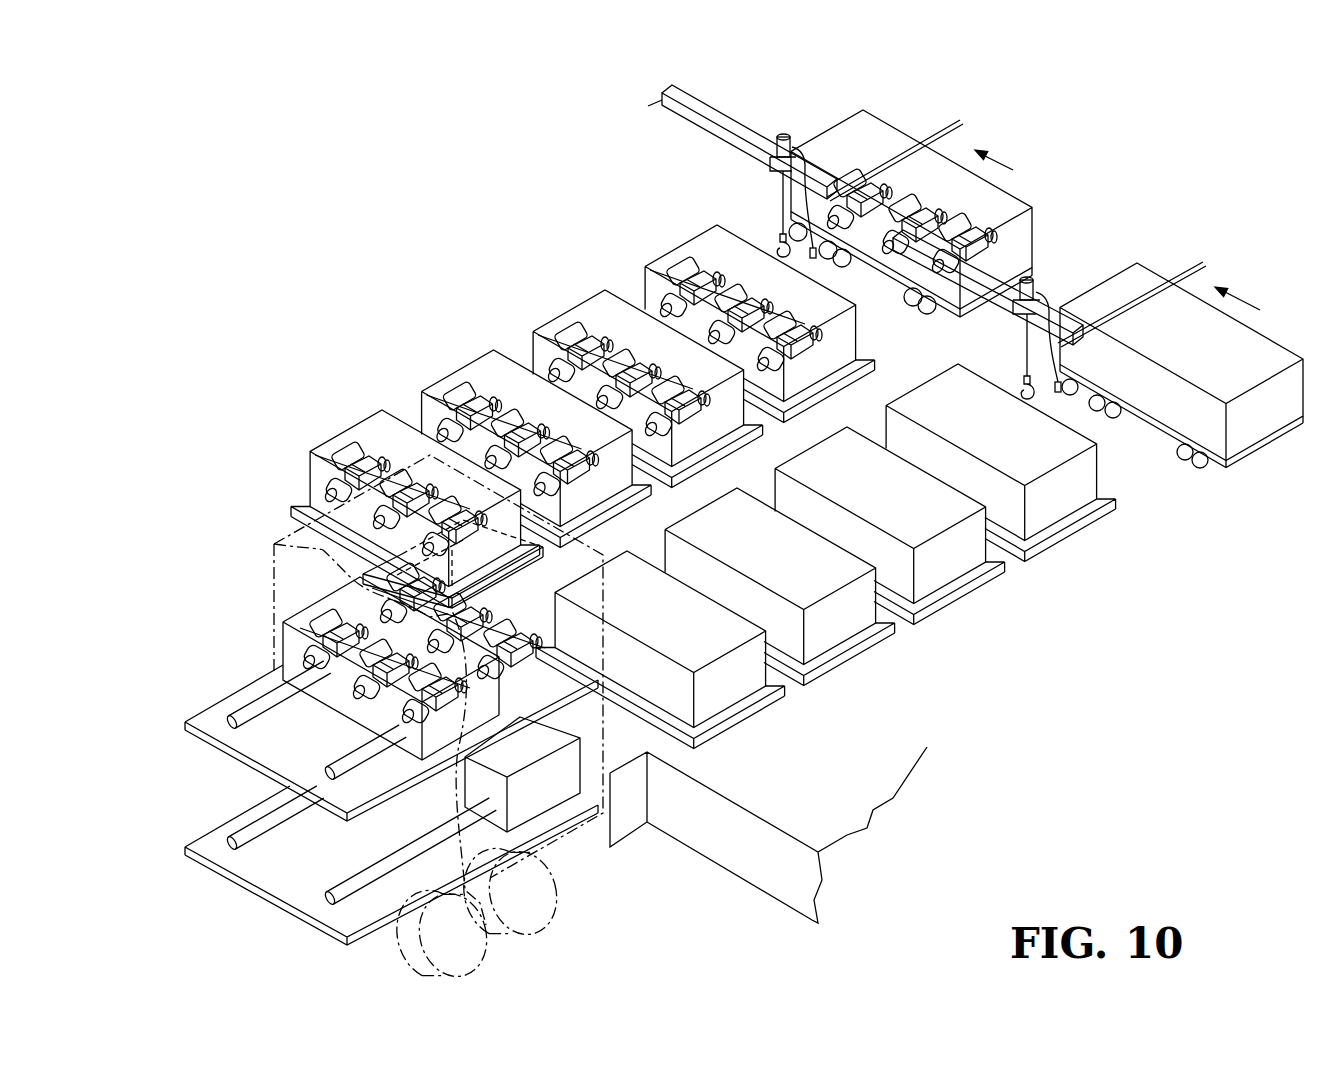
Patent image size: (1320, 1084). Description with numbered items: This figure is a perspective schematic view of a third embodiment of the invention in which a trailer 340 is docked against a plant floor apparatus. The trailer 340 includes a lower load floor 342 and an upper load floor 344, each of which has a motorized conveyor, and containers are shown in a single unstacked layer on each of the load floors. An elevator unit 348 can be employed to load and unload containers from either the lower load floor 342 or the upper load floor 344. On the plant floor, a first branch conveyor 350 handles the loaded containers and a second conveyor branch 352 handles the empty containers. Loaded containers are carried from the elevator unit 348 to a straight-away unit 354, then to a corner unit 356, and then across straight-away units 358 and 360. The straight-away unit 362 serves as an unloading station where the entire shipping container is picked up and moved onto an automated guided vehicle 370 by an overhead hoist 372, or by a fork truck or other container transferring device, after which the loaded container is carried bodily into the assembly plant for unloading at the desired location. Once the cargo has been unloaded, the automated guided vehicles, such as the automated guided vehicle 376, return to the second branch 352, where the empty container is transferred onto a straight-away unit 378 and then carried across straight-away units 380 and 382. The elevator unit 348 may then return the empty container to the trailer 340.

The trailer 340 is at (409, 719).
The lower load floor 342 is at (265, 882).
The upper load floor 344 is at (215, 715).
The elevator unit 348 is at (726, 709).
The first branch conveyor 350 is at (505, 332).
The second conveyor branch 352 is at (928, 647).
The straight-away unit 354 is at (597, 547).
The corner unit 356 is at (303, 503).
The straight-away unit 358 is at (650, 490).
The straight-away unit 360 is at (744, 434).
The straight-away unit 362 is at (878, 365).
The automated guided vehicle 370 is at (1032, 240).
The overhead hoist 372 is at (722, 118).
The automated guided vehicle 376 is at (1143, 420).
The straight-away unit 378 is at (1110, 493).
The straight-away unit 380 is at (998, 553).
The straight-away unit 382 is at (828, 642).